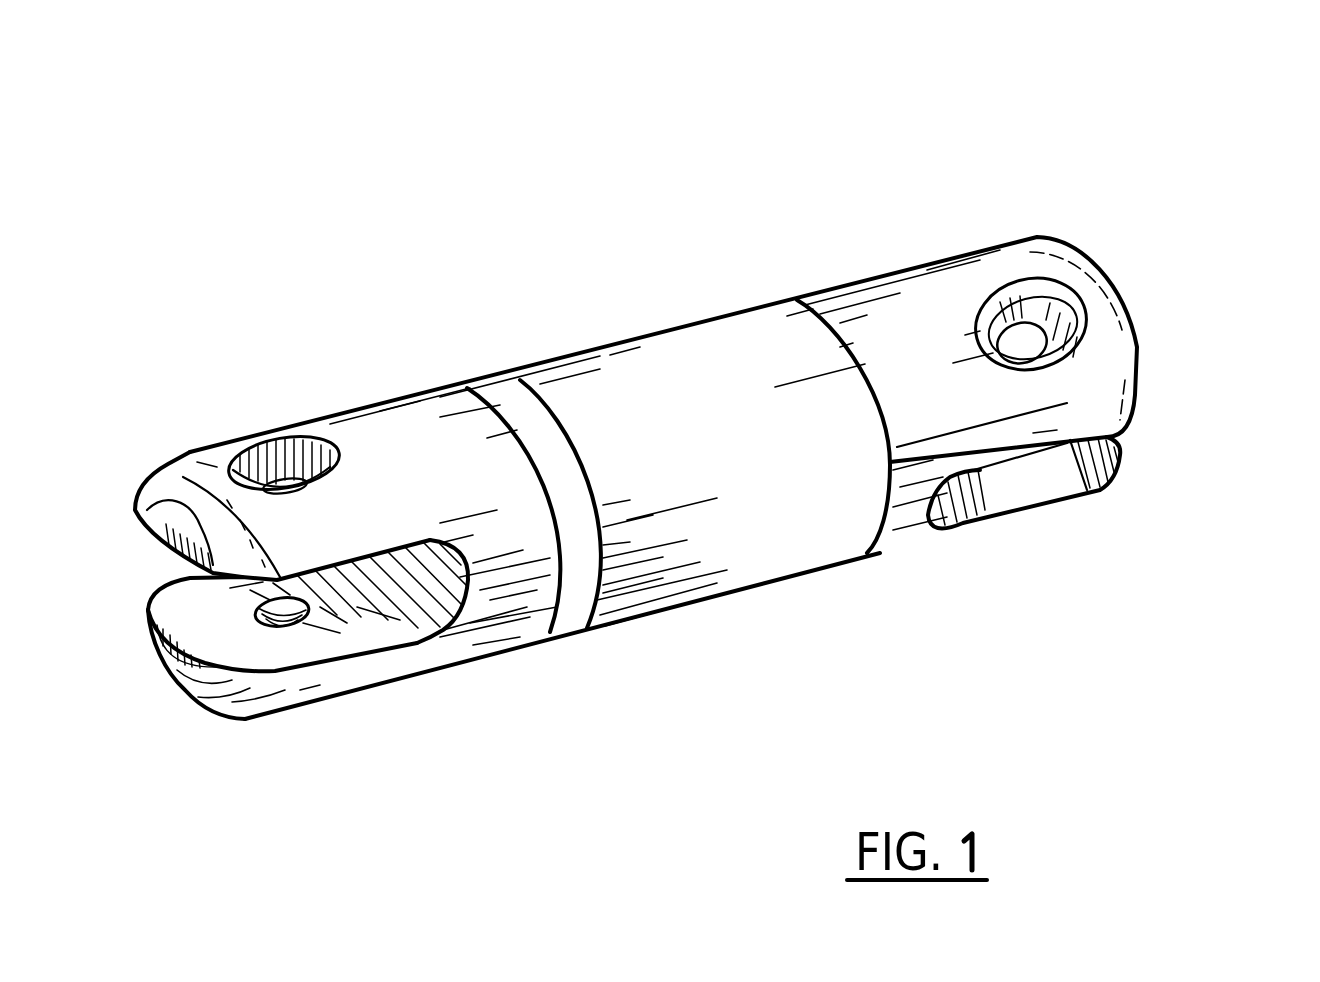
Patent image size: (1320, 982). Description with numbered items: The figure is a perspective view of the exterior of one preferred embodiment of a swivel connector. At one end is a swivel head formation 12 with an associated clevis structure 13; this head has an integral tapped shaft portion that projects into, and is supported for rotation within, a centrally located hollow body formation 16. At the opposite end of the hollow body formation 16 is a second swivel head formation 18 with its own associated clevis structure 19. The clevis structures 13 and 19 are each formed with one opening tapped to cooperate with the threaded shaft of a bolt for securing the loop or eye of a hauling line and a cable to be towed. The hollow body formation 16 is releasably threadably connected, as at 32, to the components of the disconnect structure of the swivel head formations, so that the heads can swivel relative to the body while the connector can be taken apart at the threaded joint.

The swivel head formation 12 is at (906, 230).
The clevis structure 13 is at (1140, 392).
The hollow body formation 16 is at (640, 357).
The second swivel head formation 18 is at (309, 391).
The clevis structure 19 is at (320, 680).
The releasable threaded connection 32 is at (563, 420).